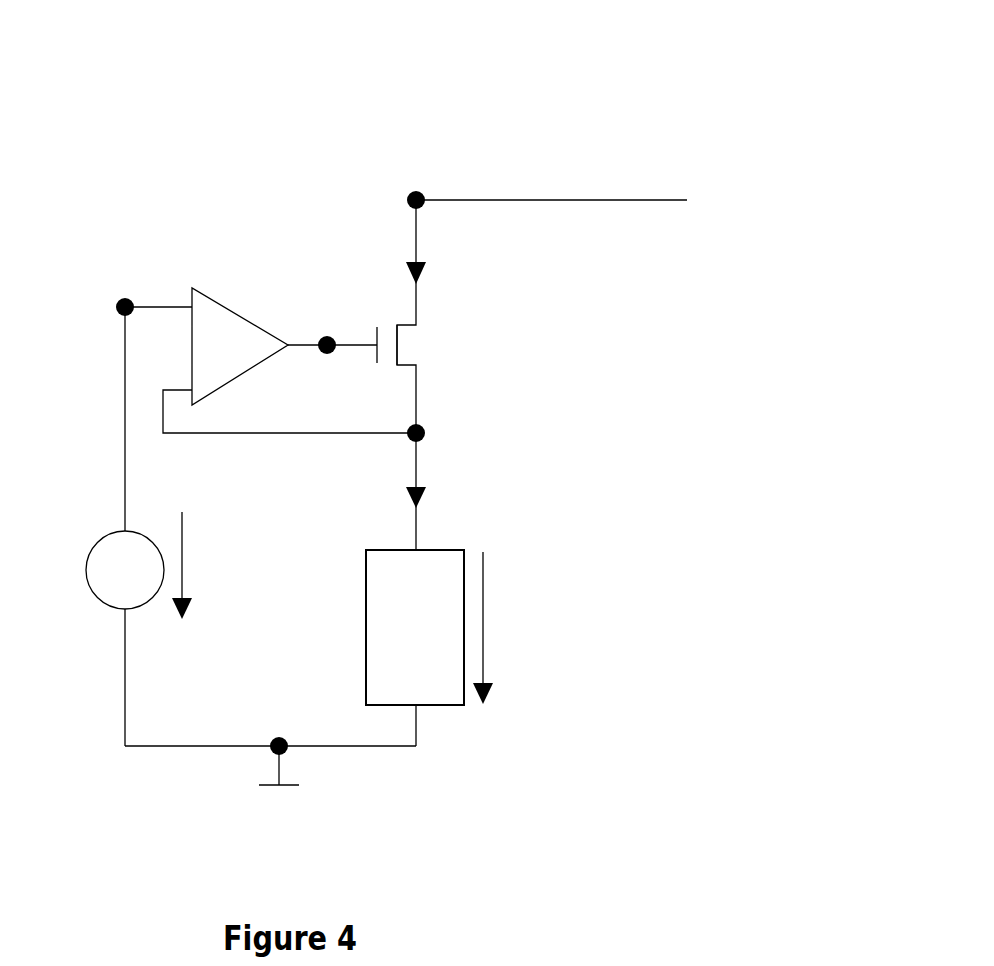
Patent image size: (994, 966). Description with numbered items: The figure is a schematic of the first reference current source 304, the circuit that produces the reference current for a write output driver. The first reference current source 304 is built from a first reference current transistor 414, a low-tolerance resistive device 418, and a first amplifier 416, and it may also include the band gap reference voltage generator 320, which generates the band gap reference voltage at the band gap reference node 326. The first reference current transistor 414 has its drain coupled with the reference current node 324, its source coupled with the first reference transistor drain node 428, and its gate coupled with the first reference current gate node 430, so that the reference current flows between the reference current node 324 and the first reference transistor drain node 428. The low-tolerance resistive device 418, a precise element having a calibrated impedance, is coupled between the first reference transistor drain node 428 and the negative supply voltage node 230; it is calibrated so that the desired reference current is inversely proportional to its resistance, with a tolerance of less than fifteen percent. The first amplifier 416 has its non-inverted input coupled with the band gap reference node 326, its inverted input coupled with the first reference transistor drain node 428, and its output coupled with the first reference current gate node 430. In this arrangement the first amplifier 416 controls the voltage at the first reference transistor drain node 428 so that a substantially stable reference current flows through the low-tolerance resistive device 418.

The first reference current source 304 is at (570, 74).
The reference current node 324 is at (408, 196).
The band gap reference node 326 is at (118, 301).
The first reference current transistor 414 is at (398, 325).
The first amplifier 416 is at (246, 364).
The first reference current gate node 430 is at (328, 355).
The first reference transistor drain node 428 is at (424, 431).
The low-tolerance resistive device 418 is at (441, 675).
The band gap reference voltage generator 320 is at (88, 562).
The negative supply voltage node 230 is at (282, 787).